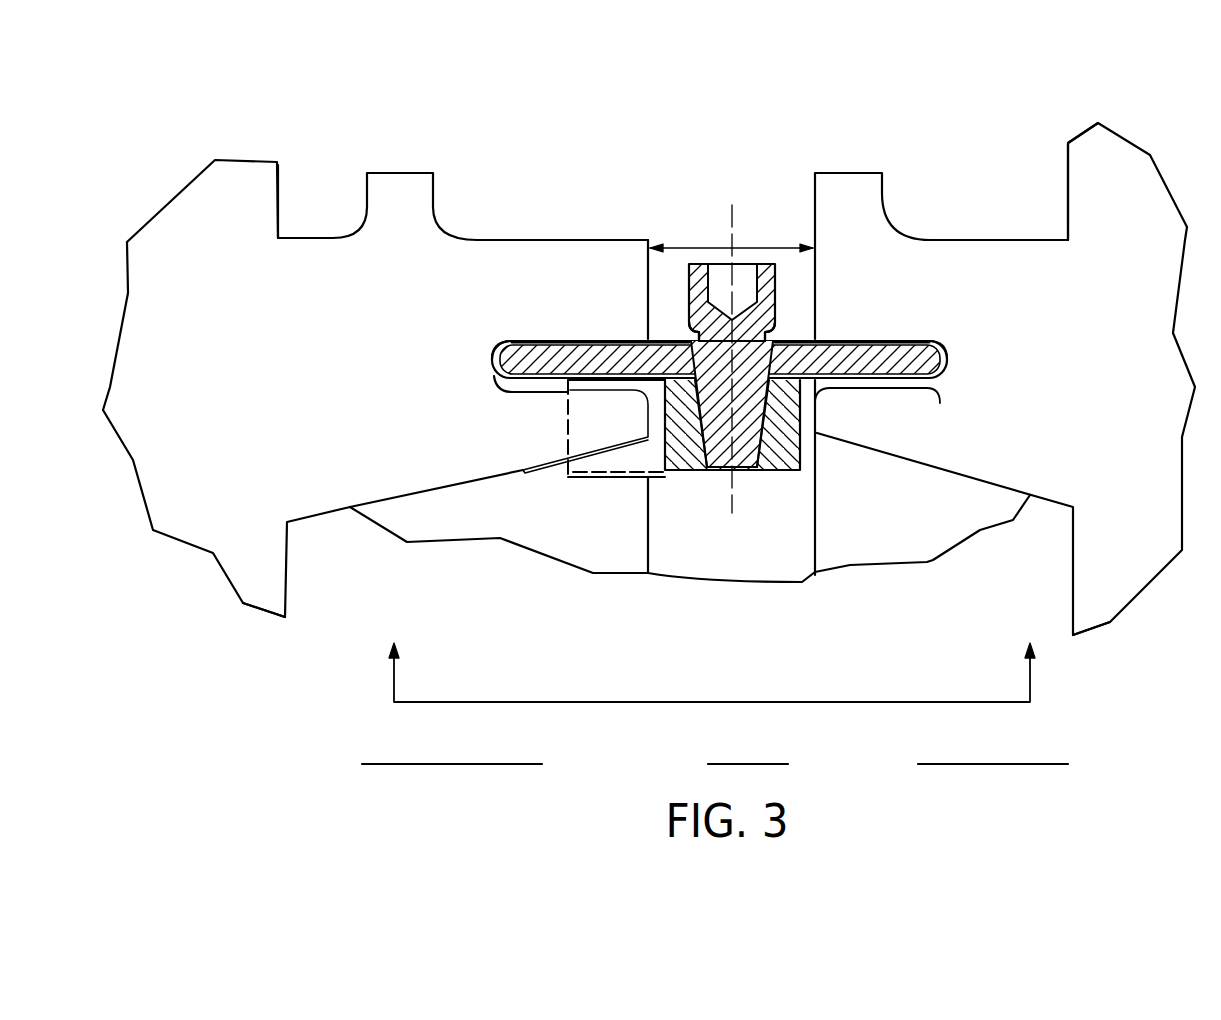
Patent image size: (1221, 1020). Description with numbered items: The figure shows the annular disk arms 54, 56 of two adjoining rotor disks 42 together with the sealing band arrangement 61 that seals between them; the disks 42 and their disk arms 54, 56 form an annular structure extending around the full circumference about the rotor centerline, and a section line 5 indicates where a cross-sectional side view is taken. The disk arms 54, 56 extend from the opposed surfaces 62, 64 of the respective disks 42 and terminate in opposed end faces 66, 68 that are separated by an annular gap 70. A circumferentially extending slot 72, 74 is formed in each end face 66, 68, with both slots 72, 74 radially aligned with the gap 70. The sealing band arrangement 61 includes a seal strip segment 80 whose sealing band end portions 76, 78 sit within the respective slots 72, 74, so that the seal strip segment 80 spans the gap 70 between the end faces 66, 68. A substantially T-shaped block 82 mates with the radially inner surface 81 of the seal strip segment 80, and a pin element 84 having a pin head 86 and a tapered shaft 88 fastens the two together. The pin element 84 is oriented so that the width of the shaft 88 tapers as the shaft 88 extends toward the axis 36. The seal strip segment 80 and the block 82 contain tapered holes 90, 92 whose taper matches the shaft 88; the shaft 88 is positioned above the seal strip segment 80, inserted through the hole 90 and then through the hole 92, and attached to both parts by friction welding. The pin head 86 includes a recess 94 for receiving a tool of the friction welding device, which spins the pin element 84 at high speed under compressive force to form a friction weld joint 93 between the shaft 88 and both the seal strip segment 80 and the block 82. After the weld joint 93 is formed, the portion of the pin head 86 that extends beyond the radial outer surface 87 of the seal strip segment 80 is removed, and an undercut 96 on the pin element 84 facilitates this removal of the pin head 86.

The section line 5- 5 is at (722, 669).
The axis 36 is at (1057, 766).
The disks 42 is at (265, 590).
The annular disk arm 54 is at (530, 257).
The annular disk arm 56 is at (998, 252).
The sealing band arrangement 61 is at (866, 598).
The opposed surface 62 is at (280, 188).
The opposed surface 64 is at (1070, 170).
The end face 66 is at (654, 238).
The end face 68 is at (813, 193).
The annular gap 70 is at (709, 247).
The slot 72 is at (493, 368).
The slot 74 is at (948, 360).
The sealing band end portion 76 is at (490, 360).
The sealing band end portion 78 is at (945, 357).
The seal strip segment 80 is at (940, 403).
The radially inner surface 81 is at (900, 380).
The T-shaped block 82 is at (803, 458).
The pin element 84 is at (788, 299).
The pin head 86 is at (688, 288).
The radial outer surface 87 is at (912, 338).
The tapered shaft 88 is at (702, 352).
The tapered hole 90 is at (712, 360).
The tapered hole 92 is at (680, 418).
The friction weld joint 93 is at (691, 403).
The recess 94 is at (742, 280).
The undercut 96 is at (813, 332).